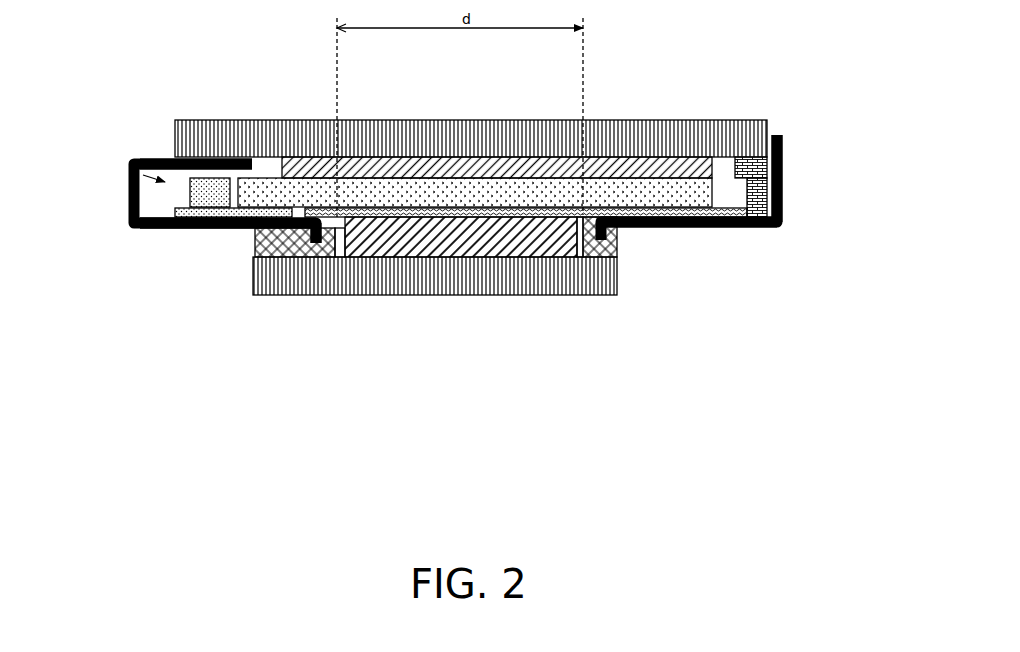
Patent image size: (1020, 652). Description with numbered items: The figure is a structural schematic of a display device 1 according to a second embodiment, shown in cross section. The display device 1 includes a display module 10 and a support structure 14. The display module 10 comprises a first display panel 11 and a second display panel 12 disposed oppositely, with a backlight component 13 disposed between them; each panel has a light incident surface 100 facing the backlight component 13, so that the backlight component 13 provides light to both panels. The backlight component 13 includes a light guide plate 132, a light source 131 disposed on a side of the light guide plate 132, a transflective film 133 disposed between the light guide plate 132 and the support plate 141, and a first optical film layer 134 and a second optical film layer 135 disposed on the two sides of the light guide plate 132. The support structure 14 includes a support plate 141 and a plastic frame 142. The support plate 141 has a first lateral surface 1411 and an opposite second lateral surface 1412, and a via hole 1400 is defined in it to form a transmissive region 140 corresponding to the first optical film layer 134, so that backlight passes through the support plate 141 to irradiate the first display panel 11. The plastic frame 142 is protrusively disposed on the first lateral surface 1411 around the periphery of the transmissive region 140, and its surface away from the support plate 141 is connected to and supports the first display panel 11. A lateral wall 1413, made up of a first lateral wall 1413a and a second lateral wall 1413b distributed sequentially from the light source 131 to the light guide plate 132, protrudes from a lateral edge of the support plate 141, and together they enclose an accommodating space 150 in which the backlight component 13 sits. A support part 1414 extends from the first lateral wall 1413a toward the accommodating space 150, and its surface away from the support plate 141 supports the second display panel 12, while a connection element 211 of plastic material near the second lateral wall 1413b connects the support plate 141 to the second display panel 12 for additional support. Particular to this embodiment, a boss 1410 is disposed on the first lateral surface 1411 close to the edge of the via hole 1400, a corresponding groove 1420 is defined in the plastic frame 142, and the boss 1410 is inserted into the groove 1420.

The display device 1 is at (438, 418).
The display module 10 is at (459, 289).
The first display panel 11 is at (567, 288).
The second display panel 12 is at (737, 138).
The backlight component 13 is at (459, 268).
The light source 131 is at (175, 212).
The light guide plate 132 is at (676, 195).
The transflective film 133 is at (783, 211).
The first optical film layer 134 is at (578, 247).
The second optical film layer 135 is at (700, 165).
The support structure 14 is at (464, 219).
The transmissive region 140 is at (468, 226).
The via hole 1400 is at (341, 226).
The support plate 141 is at (157, 228).
The boss 1410 is at (312, 233).
The first lateral surface 1411 is at (753, 228).
The second lateral surface 1412 is at (263, 214).
The lateral wall 1413 is at (464, 264).
The first lateral wall 1413a is at (205, 190).
The second lateral wall 1413b is at (783, 150).
The support part 1414 is at (152, 158).
The plastic frame 142 is at (617, 246).
The groove 1420 is at (317, 249).
The accommodating space 150 is at (128, 172).
The light incident surface 100 is at (622, 170).
The connection element 211 is at (783, 178).